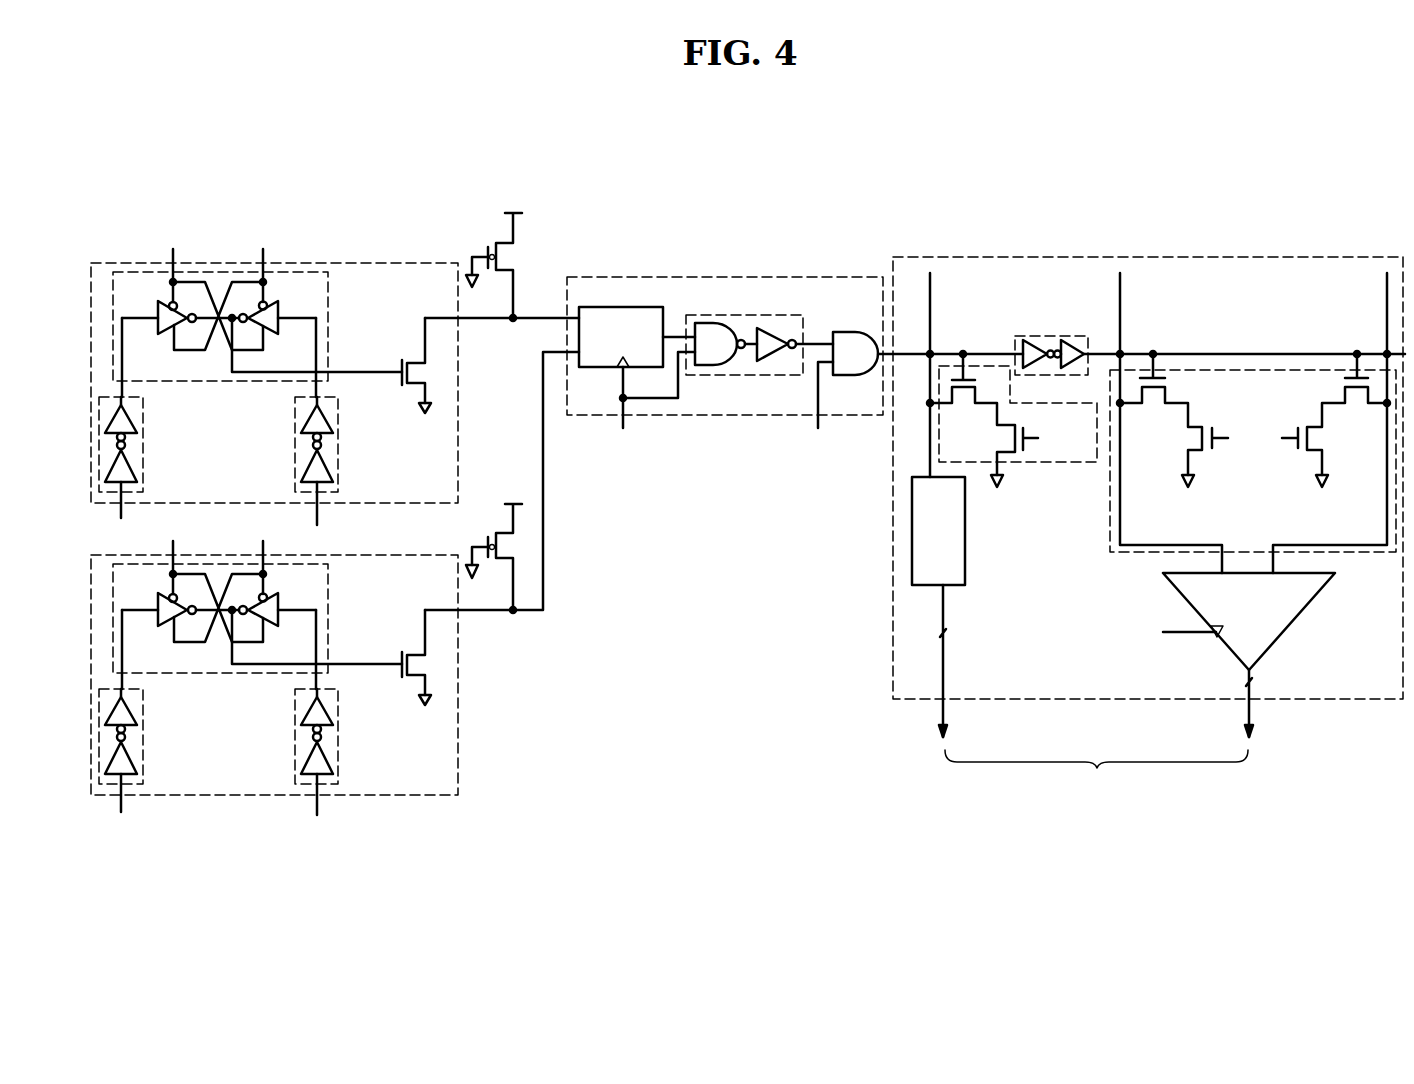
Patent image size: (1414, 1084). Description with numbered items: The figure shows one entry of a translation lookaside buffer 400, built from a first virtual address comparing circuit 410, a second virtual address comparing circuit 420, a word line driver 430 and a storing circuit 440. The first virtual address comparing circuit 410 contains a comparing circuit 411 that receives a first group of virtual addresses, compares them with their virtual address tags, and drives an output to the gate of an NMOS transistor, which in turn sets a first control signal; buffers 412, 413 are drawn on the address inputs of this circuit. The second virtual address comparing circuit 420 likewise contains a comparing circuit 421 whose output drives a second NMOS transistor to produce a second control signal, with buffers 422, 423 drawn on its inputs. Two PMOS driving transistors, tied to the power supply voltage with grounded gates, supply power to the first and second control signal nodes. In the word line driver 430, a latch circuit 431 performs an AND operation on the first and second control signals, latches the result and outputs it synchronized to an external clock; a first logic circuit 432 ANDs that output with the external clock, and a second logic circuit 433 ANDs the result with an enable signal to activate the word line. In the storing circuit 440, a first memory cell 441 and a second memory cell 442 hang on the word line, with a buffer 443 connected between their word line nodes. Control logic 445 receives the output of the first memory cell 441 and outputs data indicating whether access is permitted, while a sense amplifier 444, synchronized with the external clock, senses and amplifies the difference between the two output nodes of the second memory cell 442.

The translation lookaside buffer 400 is at (1298, 185).
The first virtual address comparing circuit 410 is at (403, 263).
The comparing circuit 411 is at (330, 288).
The odd high buffer 412 is at (145, 448).
The odd low buffer 413 is at (340, 448).
The second virtual address comparing circuit 420 is at (275, 680).
The comparing circuit 421 is at (257, 615).
The even high buffer 422 is at (152, 750).
The even low buffer 423 is at (348, 752).
The word line driver 430 is at (825, 278).
The latch circuit 431 is at (627, 307).
The first logic circuit 432 is at (743, 315).
The second logic circuit 433 is at (851, 332).
The storing circuit 440 is at (1357, 258).
The first memory cell 441 is at (1033, 463).
The second memory cell 442 is at (1132, 553).
The buffer 443 is at (1052, 336).
The sense amplifier 444 is at (1293, 623).
The control logic 445 is at (967, 530).